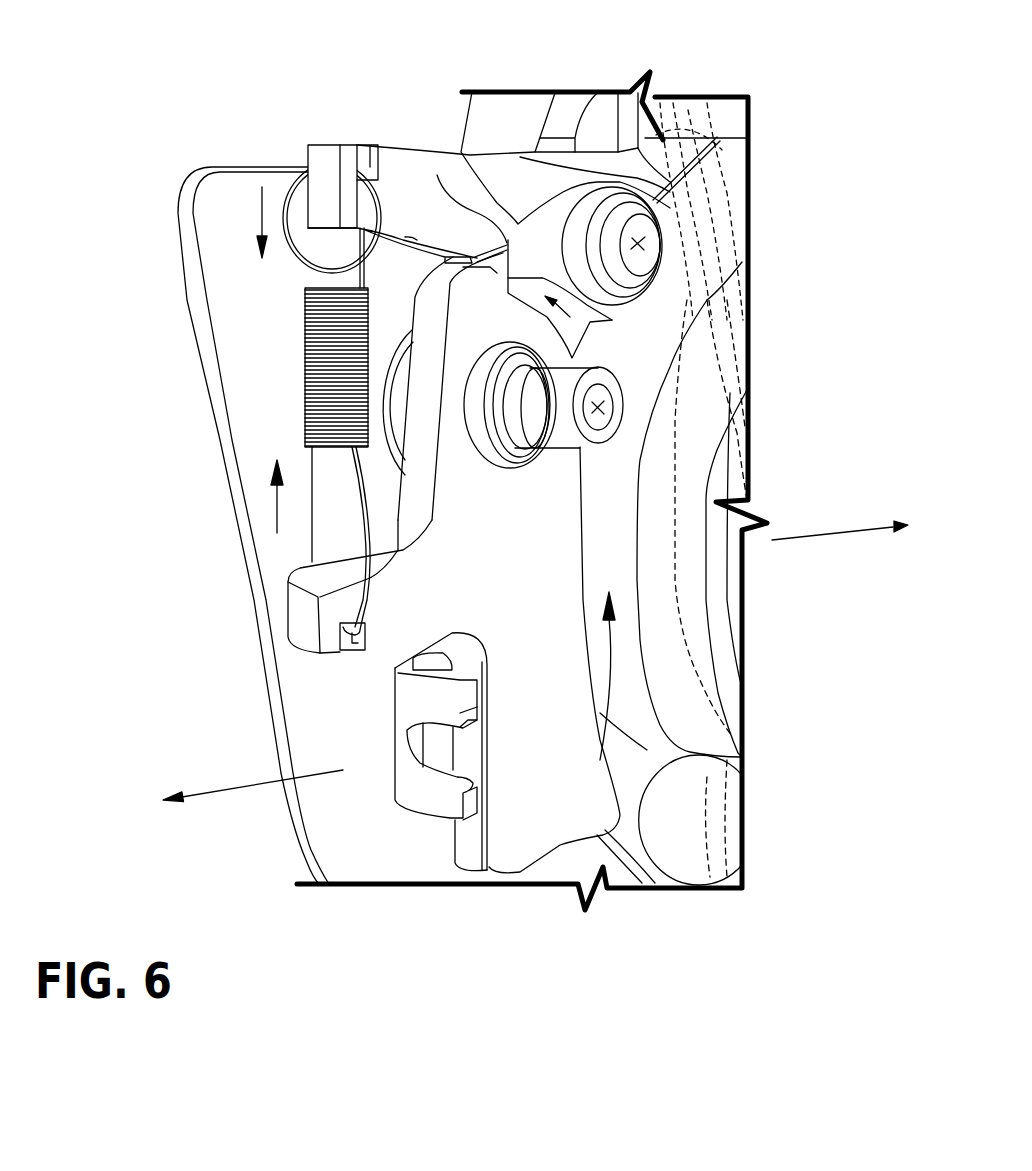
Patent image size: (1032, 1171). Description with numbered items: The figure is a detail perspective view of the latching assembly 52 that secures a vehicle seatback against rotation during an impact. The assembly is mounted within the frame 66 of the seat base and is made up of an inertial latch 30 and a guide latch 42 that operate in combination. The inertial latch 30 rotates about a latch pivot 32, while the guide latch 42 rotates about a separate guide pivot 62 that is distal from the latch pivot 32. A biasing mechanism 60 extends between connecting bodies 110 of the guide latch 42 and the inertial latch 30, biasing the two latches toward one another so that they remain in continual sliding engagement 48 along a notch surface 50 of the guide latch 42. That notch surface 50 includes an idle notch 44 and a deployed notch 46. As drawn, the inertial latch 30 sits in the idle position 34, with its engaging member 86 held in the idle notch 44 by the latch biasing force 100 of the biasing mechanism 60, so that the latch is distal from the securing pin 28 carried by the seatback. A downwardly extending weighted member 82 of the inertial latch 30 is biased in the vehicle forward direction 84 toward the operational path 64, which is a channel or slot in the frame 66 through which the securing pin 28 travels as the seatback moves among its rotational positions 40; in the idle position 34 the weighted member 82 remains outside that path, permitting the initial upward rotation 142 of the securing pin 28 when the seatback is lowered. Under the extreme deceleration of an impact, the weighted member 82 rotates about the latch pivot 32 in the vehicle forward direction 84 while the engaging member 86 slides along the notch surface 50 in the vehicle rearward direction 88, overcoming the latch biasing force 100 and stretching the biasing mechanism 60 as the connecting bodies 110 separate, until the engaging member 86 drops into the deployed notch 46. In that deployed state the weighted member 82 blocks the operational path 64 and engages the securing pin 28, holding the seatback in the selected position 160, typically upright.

The securing pin 28 is at (673, 812).
The inertial latch 30 is at (403, 617).
The latch pivot 32 is at (600, 408).
The idle position 34 is at (502, 903).
The predetermined rotational position 40 is at (697, 905).
The guide latch 42 is at (403, 180).
The idle notch 44 is at (670, 174).
The deployed notch 46 is at (437, 175).
The continual sliding engagement 48 is at (580, 322).
The notch surface 50 is at (447, 240).
The latching assembly 52 is at (250, 371).
The biasing mechanism 60 is at (313, 403).
The guide pivot 62 is at (662, 228).
The operational path 64 is at (638, 855).
The frame 66 is at (380, 838).
The weighted member 82 is at (510, 830).
The vehicle forward direction 84 is at (817, 533).
The engaging member 86 is at (497, 273).
The vehicle rearward direction 88 is at (225, 797).
The latch biasing force 100 is at (262, 207).
The connecting bodies 110 is at (360, 147).
The upward rotation 142 is at (622, 689).
The selected position 160 is at (771, 864).